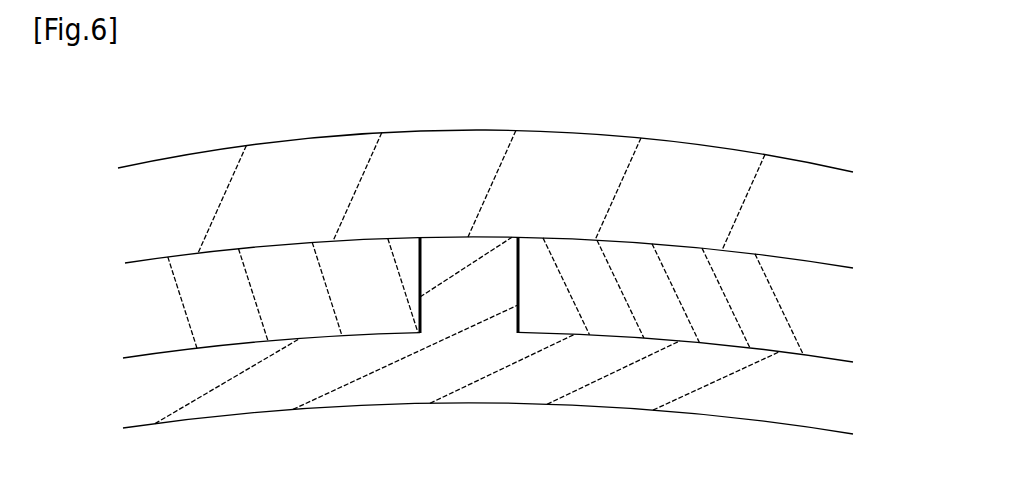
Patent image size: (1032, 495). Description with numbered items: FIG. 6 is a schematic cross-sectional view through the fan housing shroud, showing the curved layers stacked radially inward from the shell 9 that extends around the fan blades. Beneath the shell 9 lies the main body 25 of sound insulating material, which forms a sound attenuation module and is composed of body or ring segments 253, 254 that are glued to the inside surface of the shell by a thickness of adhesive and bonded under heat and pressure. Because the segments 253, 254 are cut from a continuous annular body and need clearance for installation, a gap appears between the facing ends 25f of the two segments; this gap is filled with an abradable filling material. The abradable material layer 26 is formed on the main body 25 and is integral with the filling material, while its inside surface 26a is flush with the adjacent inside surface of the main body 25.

The annular shell 9 is at (833, 166).
The main body 25 is at (478, 272).
The ends of segments 25f is at (420, 275).
The ring segment 253 is at (536, 272).
The ring segment 254 is at (132, 262).
The abradable material layer 26 is at (830, 358).
The inside surface of abradable layer 26a is at (820, 429).